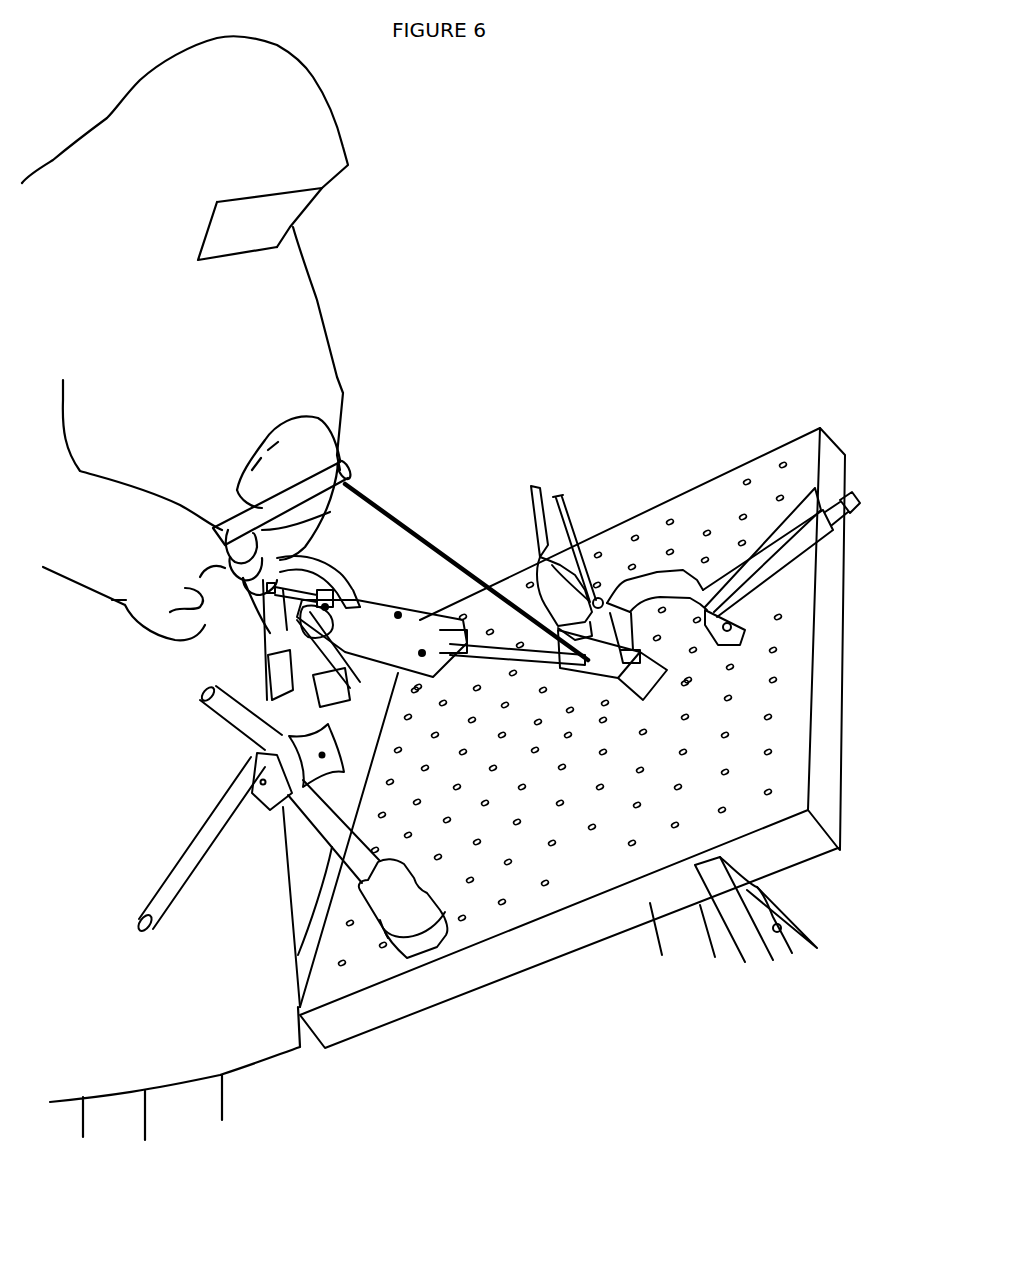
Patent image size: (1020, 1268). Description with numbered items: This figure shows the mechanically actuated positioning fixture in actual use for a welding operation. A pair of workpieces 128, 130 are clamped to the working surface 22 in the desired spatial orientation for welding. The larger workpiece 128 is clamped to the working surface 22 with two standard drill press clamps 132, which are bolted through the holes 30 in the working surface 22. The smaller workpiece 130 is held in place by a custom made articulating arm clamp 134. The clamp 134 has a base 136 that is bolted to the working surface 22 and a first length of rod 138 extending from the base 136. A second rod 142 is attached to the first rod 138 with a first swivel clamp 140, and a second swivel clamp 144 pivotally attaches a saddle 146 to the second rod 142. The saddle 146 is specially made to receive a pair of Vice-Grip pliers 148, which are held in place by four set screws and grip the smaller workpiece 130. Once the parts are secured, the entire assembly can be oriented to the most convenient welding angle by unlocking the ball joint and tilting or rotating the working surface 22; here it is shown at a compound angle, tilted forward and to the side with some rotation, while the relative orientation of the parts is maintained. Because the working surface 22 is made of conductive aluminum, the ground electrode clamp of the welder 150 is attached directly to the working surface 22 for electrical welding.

The working surface 22 is at (765, 457).
The holes 30 is at (708, 500).
The larger workpiece 128 is at (604, 632).
The smaller workpiece 130 is at (508, 595).
The drill press clamps 132 is at (572, 540).
The articulating arm clamp 134 is at (263, 841).
The base 136 is at (448, 938).
The first length of rod 138 is at (298, 955).
The first swivel clamp 140 is at (252, 750).
The second rod 142 is at (210, 682).
The second swivel clamp 144 is at (265, 668).
The saddle 146 is at (357, 605).
The Vice-Grip pliers 148 is at (425, 614).
The welder 150 is at (794, 919).